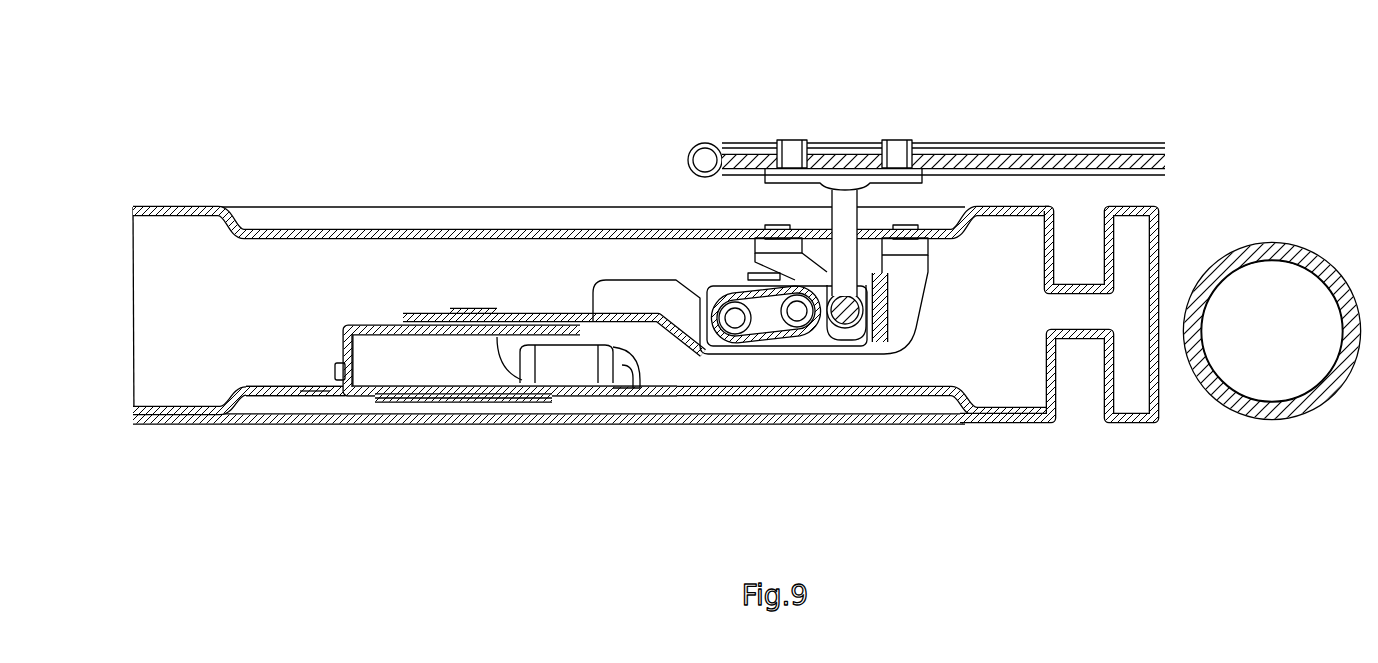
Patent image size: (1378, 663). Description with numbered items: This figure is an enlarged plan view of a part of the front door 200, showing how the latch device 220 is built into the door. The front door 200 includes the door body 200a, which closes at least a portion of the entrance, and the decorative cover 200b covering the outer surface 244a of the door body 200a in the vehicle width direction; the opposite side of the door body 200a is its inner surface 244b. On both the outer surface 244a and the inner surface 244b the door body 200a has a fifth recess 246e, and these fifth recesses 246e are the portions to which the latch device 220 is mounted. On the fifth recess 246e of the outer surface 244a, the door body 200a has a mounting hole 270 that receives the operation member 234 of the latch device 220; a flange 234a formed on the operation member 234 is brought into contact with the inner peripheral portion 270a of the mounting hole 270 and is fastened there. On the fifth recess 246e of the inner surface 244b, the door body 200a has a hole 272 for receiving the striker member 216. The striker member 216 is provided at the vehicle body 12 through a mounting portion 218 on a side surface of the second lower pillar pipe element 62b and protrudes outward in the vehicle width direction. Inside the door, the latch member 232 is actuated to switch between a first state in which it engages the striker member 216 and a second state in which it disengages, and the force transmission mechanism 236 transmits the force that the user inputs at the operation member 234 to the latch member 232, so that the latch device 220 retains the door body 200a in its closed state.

The front door 200 is at (180, 428).
The door body 200a is at (283, 222).
The decorative cover 200b is at (1050, 428).
The outer surface 244a is at (200, 418).
The inner surface 244b is at (186, 207).
The fifth recess 246e is at (402, 230).
The mounting hole 270 is at (357, 400).
The inner peripheral portion 270a is at (297, 390).
The operation member 234 is at (530, 406).
The flange 234a is at (315, 393).
The latch device 220 is at (455, 403).
The force transmission mechanism 236 is at (565, 310).
The latch member 232 is at (822, 352).
The hole 272 is at (823, 230).
The striker member 216 is at (858, 222).
The mounting portion 218 is at (762, 128).
The second lower pillar pipe element 62b is at (1272, 247).
The vehicle body 12 is at (1228, 418).